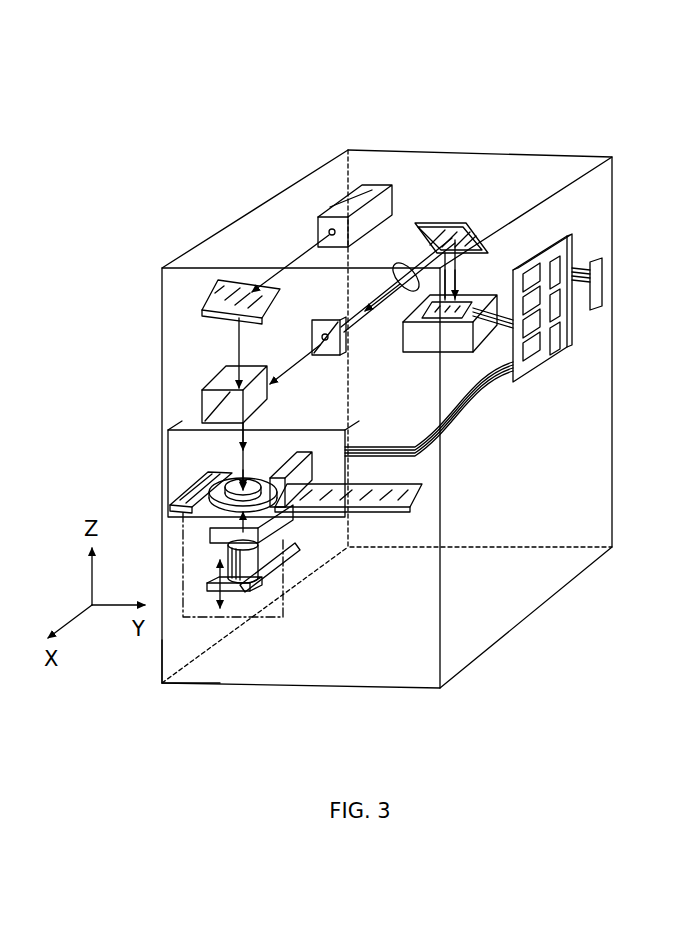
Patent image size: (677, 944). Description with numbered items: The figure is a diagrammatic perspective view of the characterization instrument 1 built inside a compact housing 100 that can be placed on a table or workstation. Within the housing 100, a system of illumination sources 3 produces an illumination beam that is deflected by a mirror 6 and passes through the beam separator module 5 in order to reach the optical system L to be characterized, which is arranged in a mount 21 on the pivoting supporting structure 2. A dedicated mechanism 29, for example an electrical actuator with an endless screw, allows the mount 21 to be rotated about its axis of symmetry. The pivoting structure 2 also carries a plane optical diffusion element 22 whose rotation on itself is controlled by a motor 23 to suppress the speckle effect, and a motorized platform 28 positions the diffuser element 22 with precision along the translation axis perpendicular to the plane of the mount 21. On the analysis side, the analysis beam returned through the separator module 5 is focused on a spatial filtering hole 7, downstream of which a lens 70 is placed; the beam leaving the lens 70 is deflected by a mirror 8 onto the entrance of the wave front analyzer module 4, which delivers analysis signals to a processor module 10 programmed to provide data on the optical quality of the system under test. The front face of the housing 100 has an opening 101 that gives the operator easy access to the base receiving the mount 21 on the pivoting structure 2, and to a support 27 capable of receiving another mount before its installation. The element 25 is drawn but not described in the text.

The characterization instrument 1 is at (172, 697).
The pivoting supporting structure 2 is at (285, 622).
The system of illumination sources 3 is at (372, 188).
The wave front analyzer module 4 is at (432, 340).
The beam separator module 5 is at (205, 390).
The mirror 6 is at (218, 283).
The spatial filtering hole 7 is at (312, 322).
The mirror 8 is at (477, 225).
The processor module 10 is at (565, 243).
The mount 21 is at (287, 527).
The plane optical diffusion element 22 is at (277, 560).
The motor 23 is at (258, 575).
The sample holder block 25 is at (307, 422).
The support 27 is at (413, 517).
The motorized platform 28 is at (207, 588).
The dedicated mechanism 29 is at (212, 487).
The lens 70 is at (407, 260).
The compact housing 100 is at (502, 177).
The opening 101 is at (176, 440).
The optical system to be characterized L is at (218, 502).